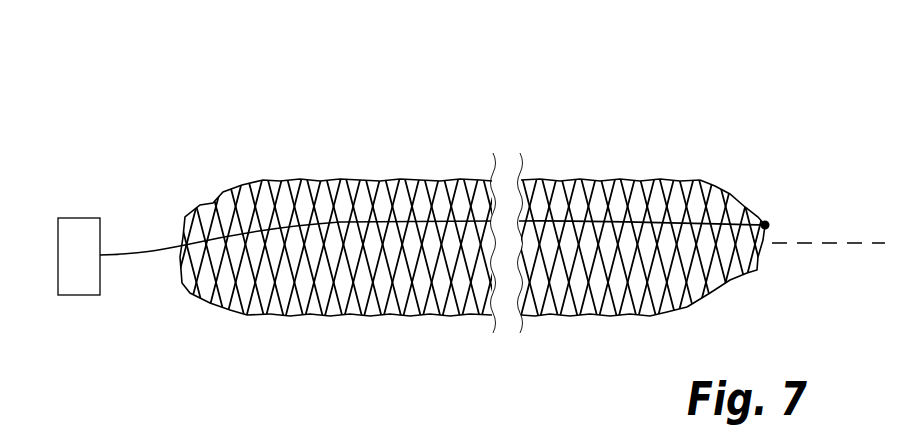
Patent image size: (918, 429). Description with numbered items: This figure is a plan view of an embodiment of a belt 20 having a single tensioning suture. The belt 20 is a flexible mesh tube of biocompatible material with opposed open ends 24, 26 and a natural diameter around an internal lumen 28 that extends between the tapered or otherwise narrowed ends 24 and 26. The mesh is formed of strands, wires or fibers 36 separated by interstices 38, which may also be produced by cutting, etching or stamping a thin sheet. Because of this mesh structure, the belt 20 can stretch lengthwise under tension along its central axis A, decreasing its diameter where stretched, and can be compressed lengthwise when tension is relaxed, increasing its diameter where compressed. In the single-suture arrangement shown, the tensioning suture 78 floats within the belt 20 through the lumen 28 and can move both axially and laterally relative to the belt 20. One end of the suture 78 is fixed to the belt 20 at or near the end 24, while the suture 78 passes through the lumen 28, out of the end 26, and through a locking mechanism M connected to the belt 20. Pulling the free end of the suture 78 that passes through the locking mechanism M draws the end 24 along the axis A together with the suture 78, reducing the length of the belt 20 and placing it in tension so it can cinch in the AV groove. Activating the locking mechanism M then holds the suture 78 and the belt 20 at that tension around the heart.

The belt 20 is at (389, 78).
The end 24 is at (745, 197).
The end 26 is at (213, 181).
The lumen 28 is at (232, 287).
The strands, wires or fibers 36 is at (407, 268).
The interstices 38 is at (602, 272).
The tensioning suture 78 is at (347, 220).
The locking mechanism M is at (85, 218).
The central axis A is at (855, 243).